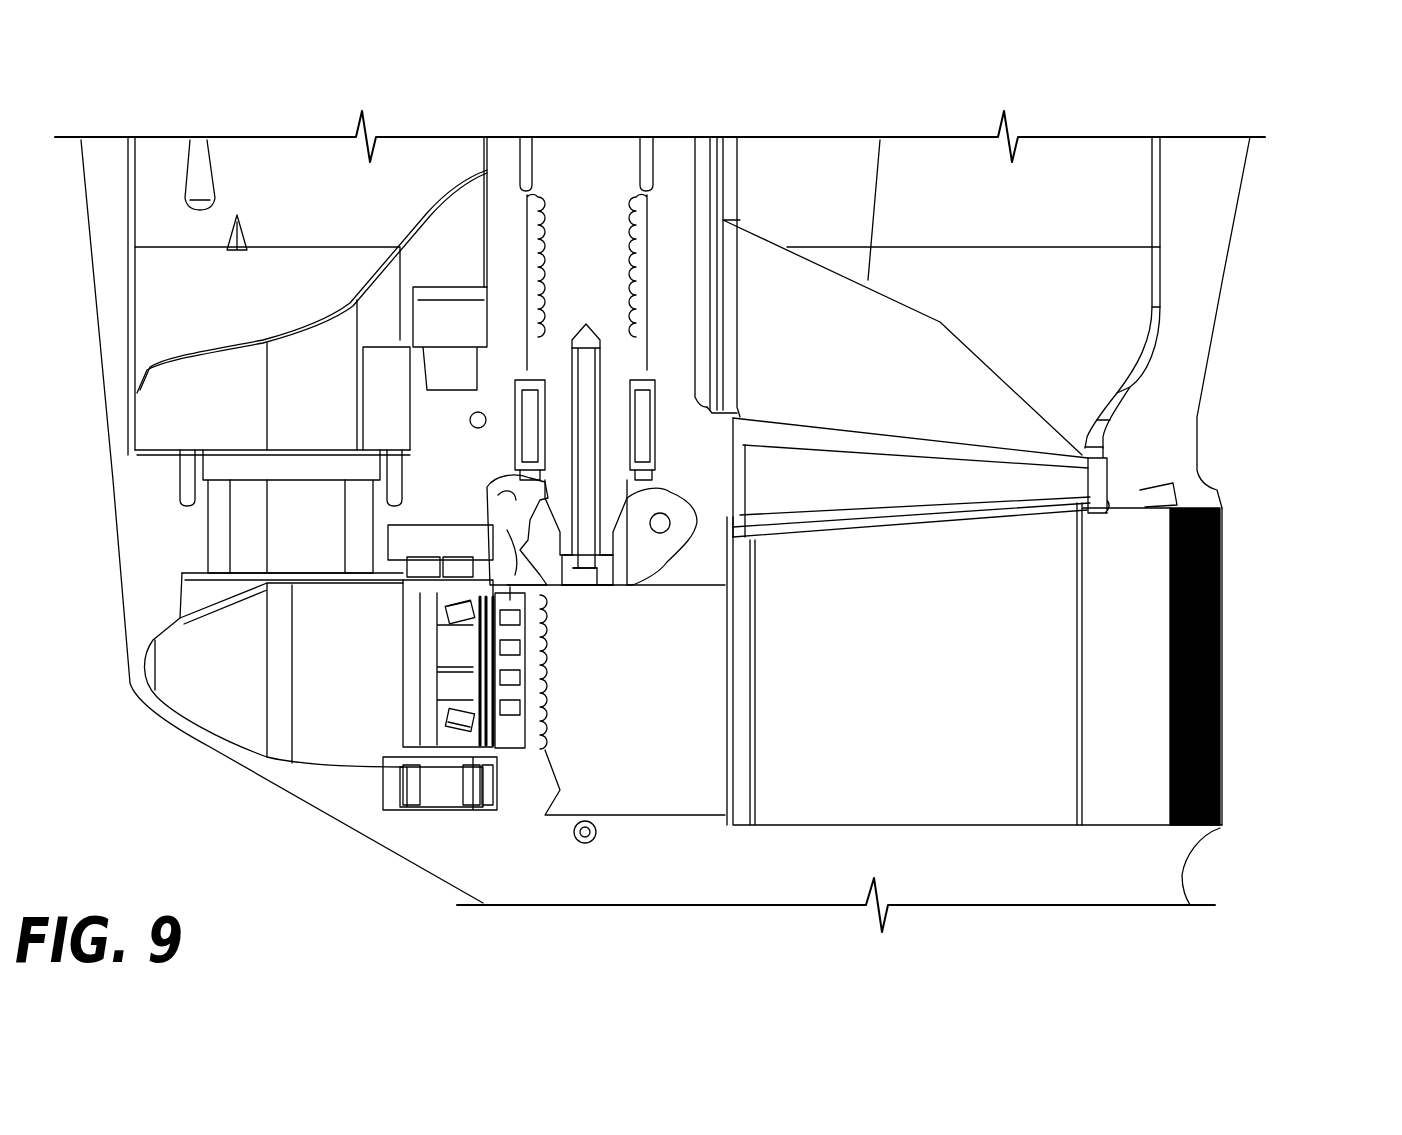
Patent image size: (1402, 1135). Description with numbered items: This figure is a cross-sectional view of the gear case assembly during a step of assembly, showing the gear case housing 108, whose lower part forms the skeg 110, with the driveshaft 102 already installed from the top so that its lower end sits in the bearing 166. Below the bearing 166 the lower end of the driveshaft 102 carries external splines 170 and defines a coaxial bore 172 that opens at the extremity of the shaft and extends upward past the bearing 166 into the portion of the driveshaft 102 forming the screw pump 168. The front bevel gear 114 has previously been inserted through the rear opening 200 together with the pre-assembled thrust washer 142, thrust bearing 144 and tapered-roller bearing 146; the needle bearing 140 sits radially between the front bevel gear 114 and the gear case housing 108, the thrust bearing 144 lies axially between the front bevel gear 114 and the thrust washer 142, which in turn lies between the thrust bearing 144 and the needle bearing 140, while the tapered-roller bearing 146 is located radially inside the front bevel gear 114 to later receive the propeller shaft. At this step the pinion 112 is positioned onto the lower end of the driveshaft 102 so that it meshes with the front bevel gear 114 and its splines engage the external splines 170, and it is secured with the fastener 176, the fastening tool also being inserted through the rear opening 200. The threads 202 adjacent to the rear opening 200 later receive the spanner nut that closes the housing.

The driveshaft 102 is at (600, 180).
The gear case housing 108 is at (1207, 273).
The skeg 110 is at (1163, 883).
The pinion 112 is at (627, 500).
The front bevel gear 114 is at (505, 797).
The needle bearing 140 is at (407, 760).
The thrust washer 142 is at (420, 767).
The thrust bearing 144 is at (483, 785).
The tapered-roller bearing 146 is at (440, 718).
The bearing 166 is at (656, 415).
The screw pump 168 is at (653, 238).
The external splines 170 is at (637, 542).
The bore 172 is at (593, 336).
The fastener 176 is at (587, 545).
The rear opening 200 is at (1222, 668).
The threads 202 is at (1220, 785).